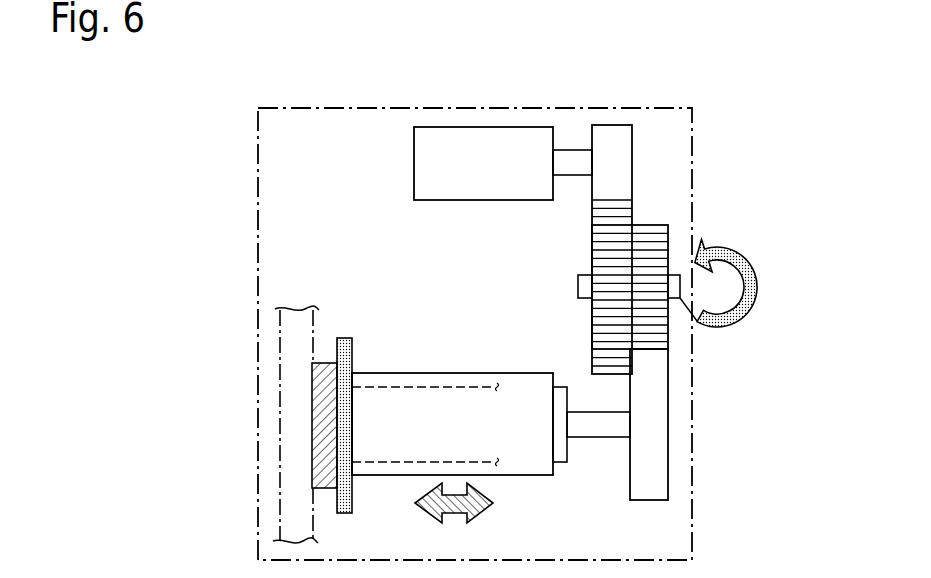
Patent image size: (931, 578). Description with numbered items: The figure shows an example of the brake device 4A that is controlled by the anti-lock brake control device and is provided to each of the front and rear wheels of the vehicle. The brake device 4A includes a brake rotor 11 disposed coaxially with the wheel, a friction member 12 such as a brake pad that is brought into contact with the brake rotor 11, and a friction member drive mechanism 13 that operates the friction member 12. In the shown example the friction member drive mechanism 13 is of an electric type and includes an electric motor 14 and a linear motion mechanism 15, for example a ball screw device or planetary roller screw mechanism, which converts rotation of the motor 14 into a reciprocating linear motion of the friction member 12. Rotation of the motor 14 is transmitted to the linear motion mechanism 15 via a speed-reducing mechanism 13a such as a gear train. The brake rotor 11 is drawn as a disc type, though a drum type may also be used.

The brake device 4A is at (257, 177).
The brake rotor 11 is at (293, 332).
The friction member 12 is at (326, 480).
The friction member drive mechanism 13 is at (435, 54).
The speed-reducing mechanism 13a is at (678, 336).
The electric motor 14 is at (442, 138).
The linear motion mechanism 15 is at (383, 380).